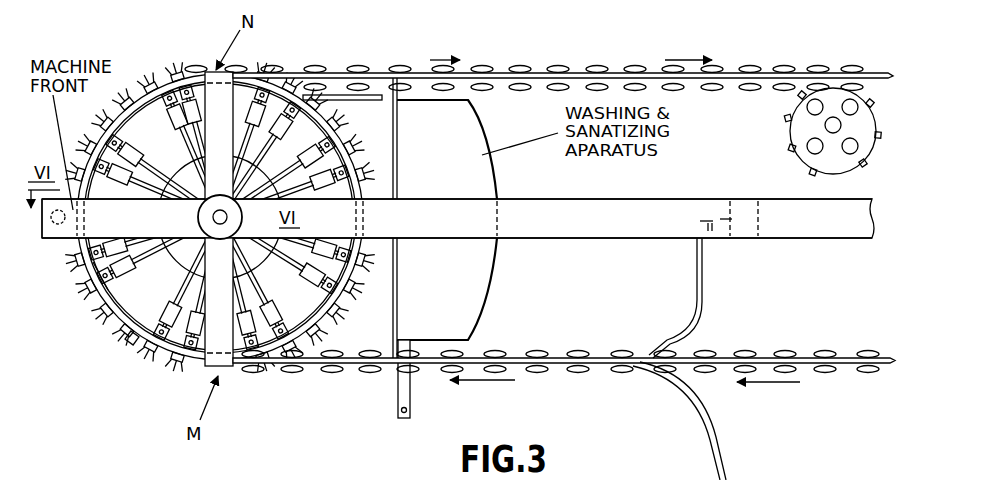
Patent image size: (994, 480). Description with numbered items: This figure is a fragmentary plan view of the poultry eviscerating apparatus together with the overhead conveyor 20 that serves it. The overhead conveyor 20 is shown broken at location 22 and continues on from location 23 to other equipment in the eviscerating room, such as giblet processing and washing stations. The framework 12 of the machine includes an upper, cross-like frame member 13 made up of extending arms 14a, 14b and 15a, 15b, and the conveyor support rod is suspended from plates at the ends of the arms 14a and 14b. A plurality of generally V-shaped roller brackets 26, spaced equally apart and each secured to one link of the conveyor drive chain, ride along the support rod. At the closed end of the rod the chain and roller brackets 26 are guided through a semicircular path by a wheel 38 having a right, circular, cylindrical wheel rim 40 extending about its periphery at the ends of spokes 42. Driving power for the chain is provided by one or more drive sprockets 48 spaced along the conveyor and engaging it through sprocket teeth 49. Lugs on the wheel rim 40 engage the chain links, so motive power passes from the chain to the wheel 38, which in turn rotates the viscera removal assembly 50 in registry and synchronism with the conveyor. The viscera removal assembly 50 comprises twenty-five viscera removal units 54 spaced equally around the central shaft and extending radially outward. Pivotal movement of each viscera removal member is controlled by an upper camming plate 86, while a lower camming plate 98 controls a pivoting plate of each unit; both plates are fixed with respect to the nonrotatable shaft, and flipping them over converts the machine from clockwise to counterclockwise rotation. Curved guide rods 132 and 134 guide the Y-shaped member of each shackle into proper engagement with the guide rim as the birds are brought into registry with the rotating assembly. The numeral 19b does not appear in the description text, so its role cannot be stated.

The framework 12 is at (558, 199).
The upper cross-like frame member 13 is at (56, 240).
The extending arm 14a is at (232, 137).
The extending arm 14b is at (232, 289).
The extending arm 15a is at (159, 228).
The extending arm 15b is at (596, 228).
The bearing block 19b is at (748, 240).
The overhead conveyor 20 is at (557, 52).
The broken location 22 is at (890, 357).
The continuation location 23 is at (893, 77).
The roller brackets 26 is at (590, 67).
The wheel 38 is at (357, 138).
The wheel rim 40 is at (352, 163).
The spokes 42 is at (137, 97).
The drive sprockets 48 is at (860, 136).
The sprocket teeth 49 is at (880, 135).
The viscera removal assembly 50 is at (133, 338).
The viscera removal units 54 is at (282, 120).
The upper camming plate 86 is at (197, 163).
The lower camming plate 98 is at (97, 280).
The curved guide rod 132 is at (706, 307).
The curved guide rod 134 is at (709, 425).